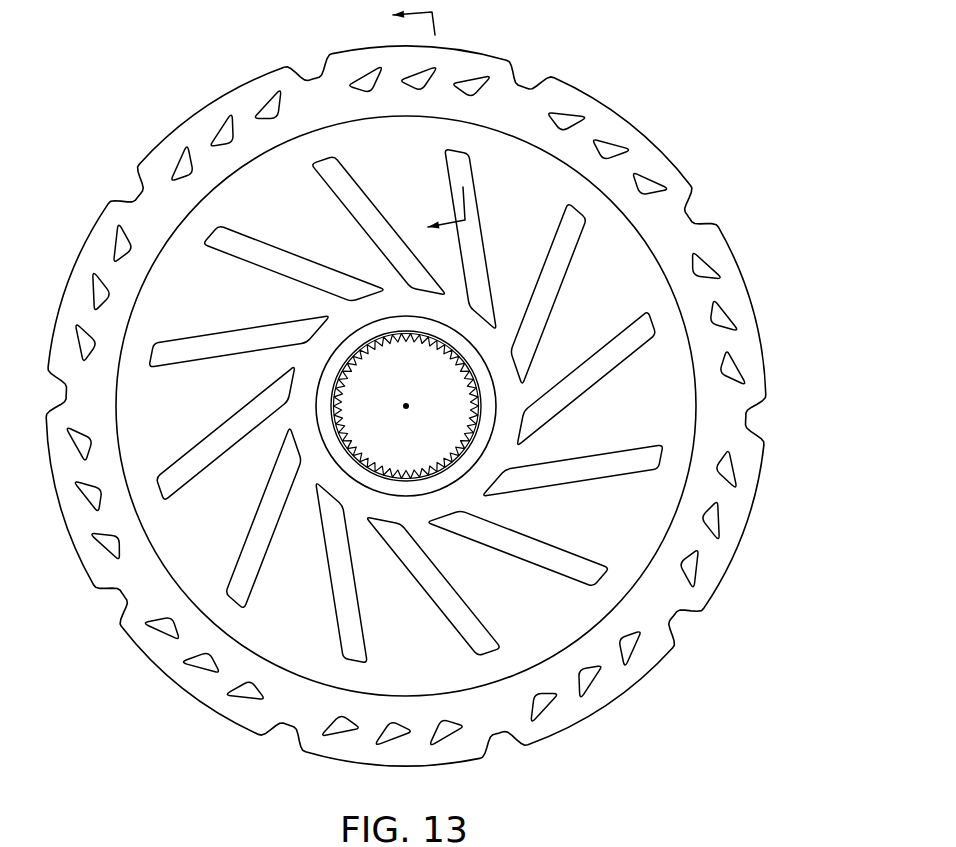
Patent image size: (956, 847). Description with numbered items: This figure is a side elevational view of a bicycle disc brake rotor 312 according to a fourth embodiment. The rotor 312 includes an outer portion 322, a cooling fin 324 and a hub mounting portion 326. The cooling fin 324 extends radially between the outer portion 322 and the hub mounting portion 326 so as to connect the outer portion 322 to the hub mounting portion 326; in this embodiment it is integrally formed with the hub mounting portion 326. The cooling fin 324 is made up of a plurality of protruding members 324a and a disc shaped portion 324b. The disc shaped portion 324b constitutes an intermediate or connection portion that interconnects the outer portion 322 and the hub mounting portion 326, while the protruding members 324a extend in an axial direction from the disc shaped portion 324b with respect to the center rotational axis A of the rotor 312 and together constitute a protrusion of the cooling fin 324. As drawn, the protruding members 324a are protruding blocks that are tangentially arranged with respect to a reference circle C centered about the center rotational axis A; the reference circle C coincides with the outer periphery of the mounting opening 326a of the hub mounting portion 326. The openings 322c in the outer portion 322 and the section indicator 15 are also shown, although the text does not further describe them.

The bicycle disc brake rotor 312 is at (647, 65).
The outer portion 322 is at (673, 157).
The openings of outer rotor portion 322c is at (718, 555).
The cooling fin 324 is at (648, 233).
The protruding members 324a is at (610, 377).
The disc shaped portion 324b is at (663, 365).
The hub mounting portion 326 is at (393, 497).
The mounting opening 326a is at (367, 408).
The section line 15- 15 is at (411, 115).
The center rotational axis A is at (408, 400).
The reference circle C is at (410, 337).